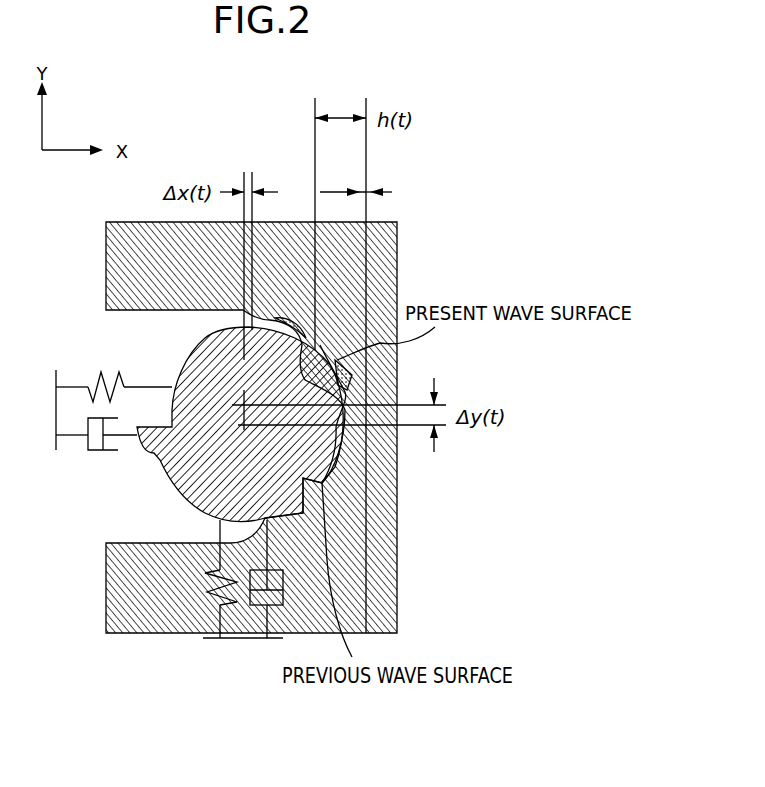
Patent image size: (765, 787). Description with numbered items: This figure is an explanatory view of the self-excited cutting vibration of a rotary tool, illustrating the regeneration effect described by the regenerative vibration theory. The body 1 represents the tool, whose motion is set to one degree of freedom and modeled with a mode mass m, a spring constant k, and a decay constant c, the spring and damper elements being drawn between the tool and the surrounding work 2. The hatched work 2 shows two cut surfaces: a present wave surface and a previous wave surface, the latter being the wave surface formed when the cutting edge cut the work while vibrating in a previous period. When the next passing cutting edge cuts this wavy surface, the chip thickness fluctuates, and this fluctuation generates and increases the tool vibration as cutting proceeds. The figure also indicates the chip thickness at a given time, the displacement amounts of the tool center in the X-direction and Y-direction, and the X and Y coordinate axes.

The mass body (workpiece) 1 is at (239, 429).
The wave surface member (hatched wall) 2 is at (127, 589).
The mode mass m is at (155, 515).
The spring constant k is at (169, 490).
The decay constant c is at (207, 528).